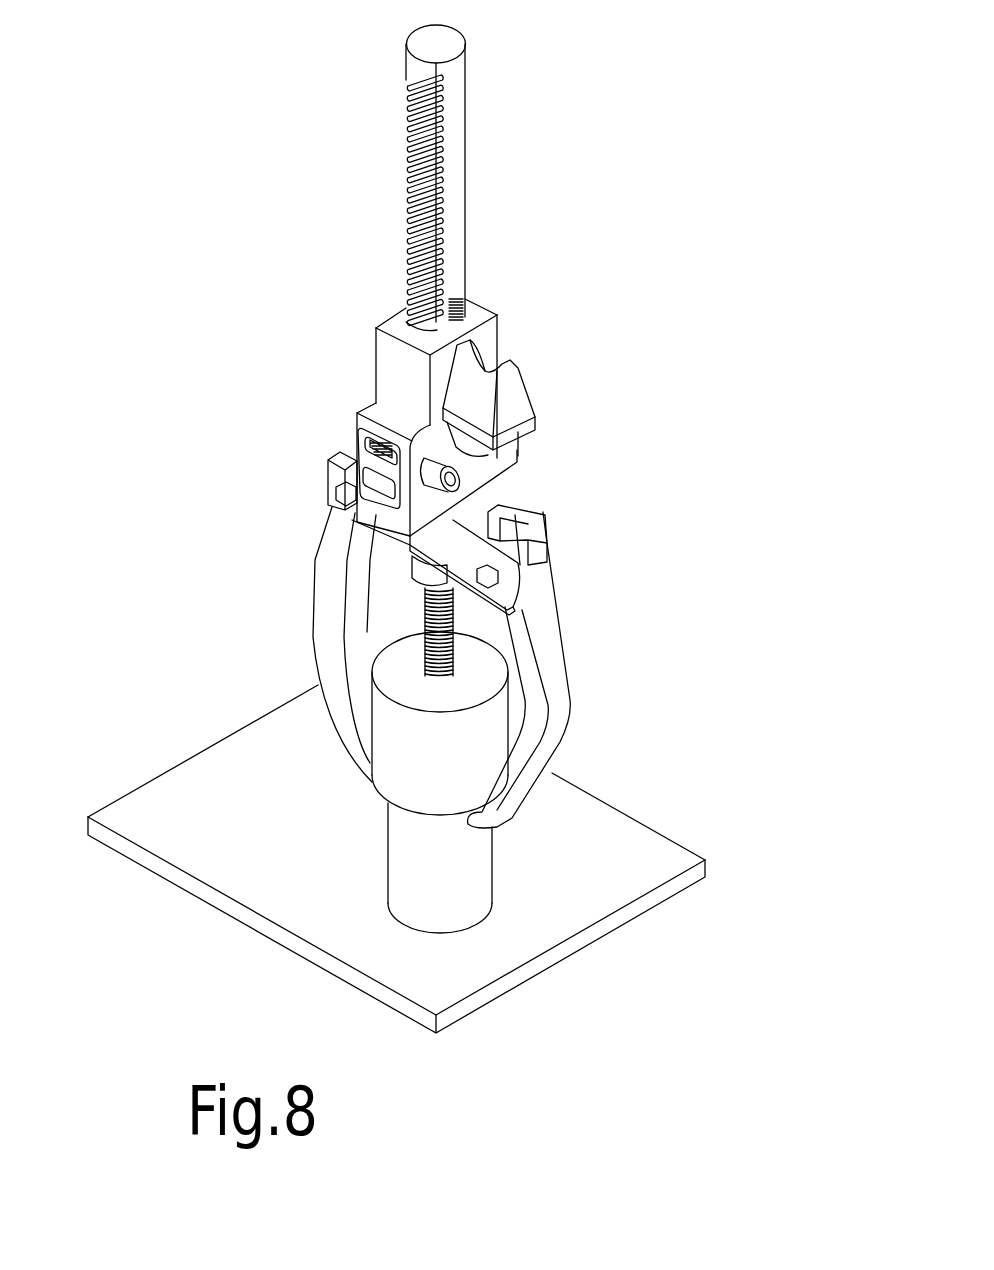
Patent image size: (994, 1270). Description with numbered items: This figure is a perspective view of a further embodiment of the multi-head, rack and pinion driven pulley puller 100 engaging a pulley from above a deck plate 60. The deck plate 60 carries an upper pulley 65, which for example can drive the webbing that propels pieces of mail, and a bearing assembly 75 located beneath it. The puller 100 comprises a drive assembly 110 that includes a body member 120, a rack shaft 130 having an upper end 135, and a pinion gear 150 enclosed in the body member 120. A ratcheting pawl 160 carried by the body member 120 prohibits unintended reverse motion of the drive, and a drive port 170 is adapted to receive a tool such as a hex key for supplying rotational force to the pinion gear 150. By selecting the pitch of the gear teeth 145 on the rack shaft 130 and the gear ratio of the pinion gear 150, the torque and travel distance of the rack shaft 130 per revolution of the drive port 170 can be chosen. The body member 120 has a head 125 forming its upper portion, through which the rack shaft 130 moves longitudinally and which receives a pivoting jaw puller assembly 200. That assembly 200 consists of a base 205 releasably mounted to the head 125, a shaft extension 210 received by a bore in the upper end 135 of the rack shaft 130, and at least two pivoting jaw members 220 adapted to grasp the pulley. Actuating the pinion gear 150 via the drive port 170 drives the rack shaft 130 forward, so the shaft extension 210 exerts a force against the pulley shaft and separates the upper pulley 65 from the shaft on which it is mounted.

The multi-head, rack and pinion driven pulley puller 100 is at (684, 148).
The rack shaft 130 is at (447, 75).
The gear teeth 145 is at (407, 141).
The drive assembly 110 is at (376, 313).
The body member 120 is at (387, 400).
The pinion gear 150 is at (387, 447).
The head 125 is at (362, 500).
The drive port 170 is at (468, 483).
The ratcheting pawl 160 is at (470, 443).
The pivoting jaw puller assembly 200 is at (562, 556).
The upper end 135 is at (370, 547).
The base 205 is at (475, 523).
The shaft extension 210 is at (438, 628).
The upper pulley 65 is at (391, 740).
The bearing assembly 75 is at (395, 852).
The pivoting jaw members 220 is at (335, 547).
The deck plate 60 is at (648, 858).